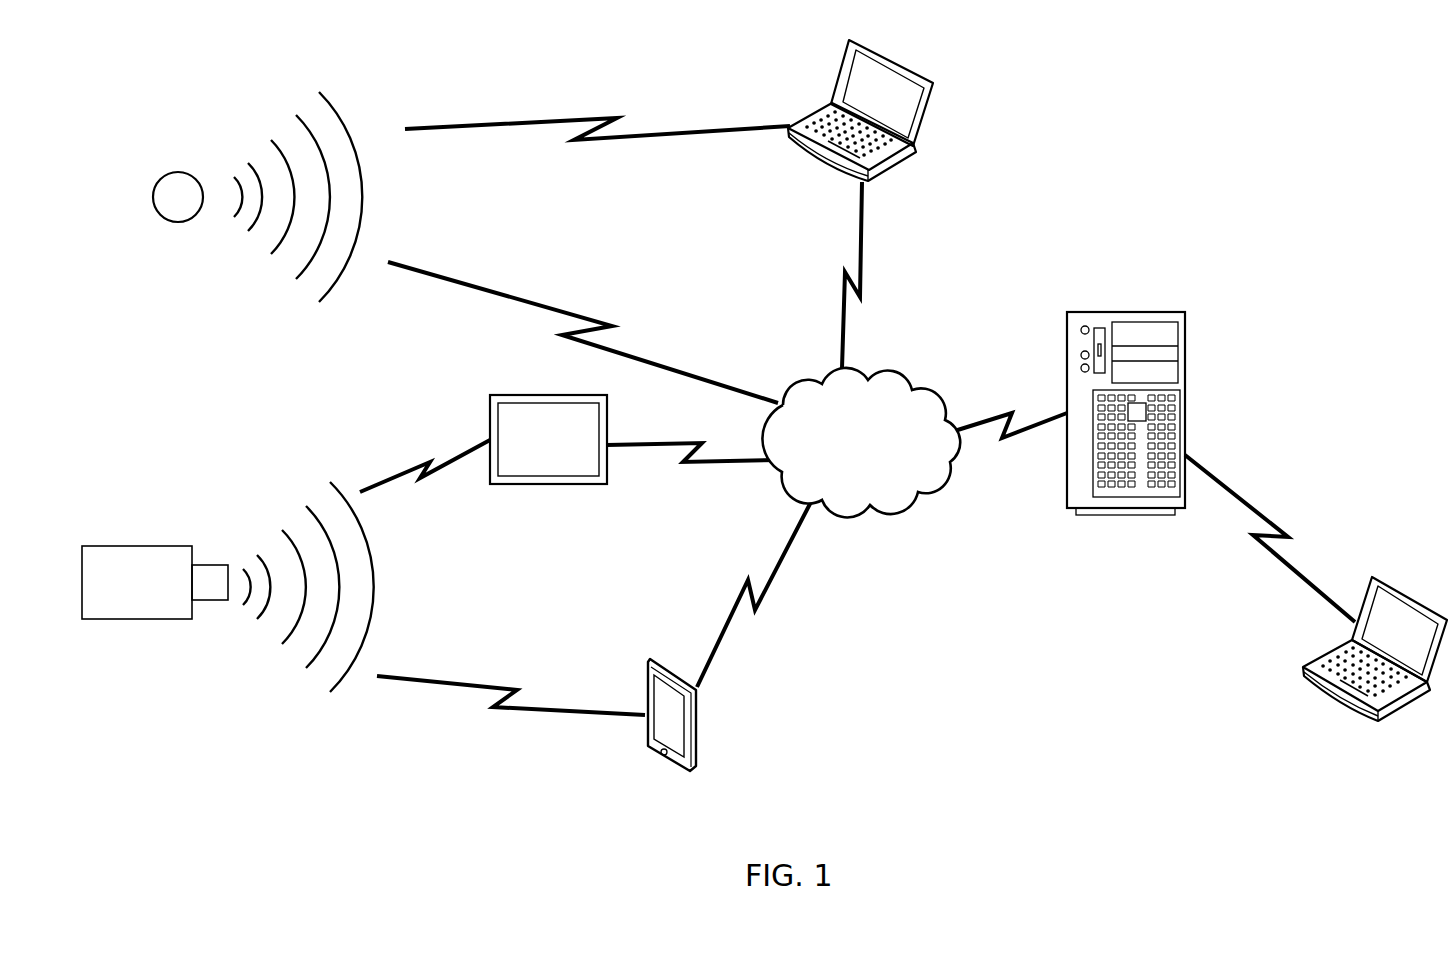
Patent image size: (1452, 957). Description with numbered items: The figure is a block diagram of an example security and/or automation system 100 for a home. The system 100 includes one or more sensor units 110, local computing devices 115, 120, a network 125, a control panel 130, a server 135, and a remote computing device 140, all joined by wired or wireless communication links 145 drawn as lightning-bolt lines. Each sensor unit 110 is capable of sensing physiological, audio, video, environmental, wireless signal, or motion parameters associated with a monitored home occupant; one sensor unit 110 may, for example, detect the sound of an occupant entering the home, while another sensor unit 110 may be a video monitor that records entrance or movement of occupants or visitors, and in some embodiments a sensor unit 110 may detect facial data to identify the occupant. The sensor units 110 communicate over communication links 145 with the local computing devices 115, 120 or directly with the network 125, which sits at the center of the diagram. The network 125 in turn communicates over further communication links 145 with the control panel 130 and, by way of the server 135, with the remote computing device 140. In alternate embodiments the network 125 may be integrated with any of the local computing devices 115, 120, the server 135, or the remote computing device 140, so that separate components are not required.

The security and/or automation system 100 is at (188, 828).
The sensor unit 110 is at (173, 224).
The local computing device 115 is at (830, 172).
The local computing device 120 is at (656, 760).
The network 125 is at (888, 378).
The control panel 130 is at (548, 481).
The server 135 is at (1150, 312).
The remote computing device 140 is at (1340, 706).
The communication link 145 is at (527, 120).